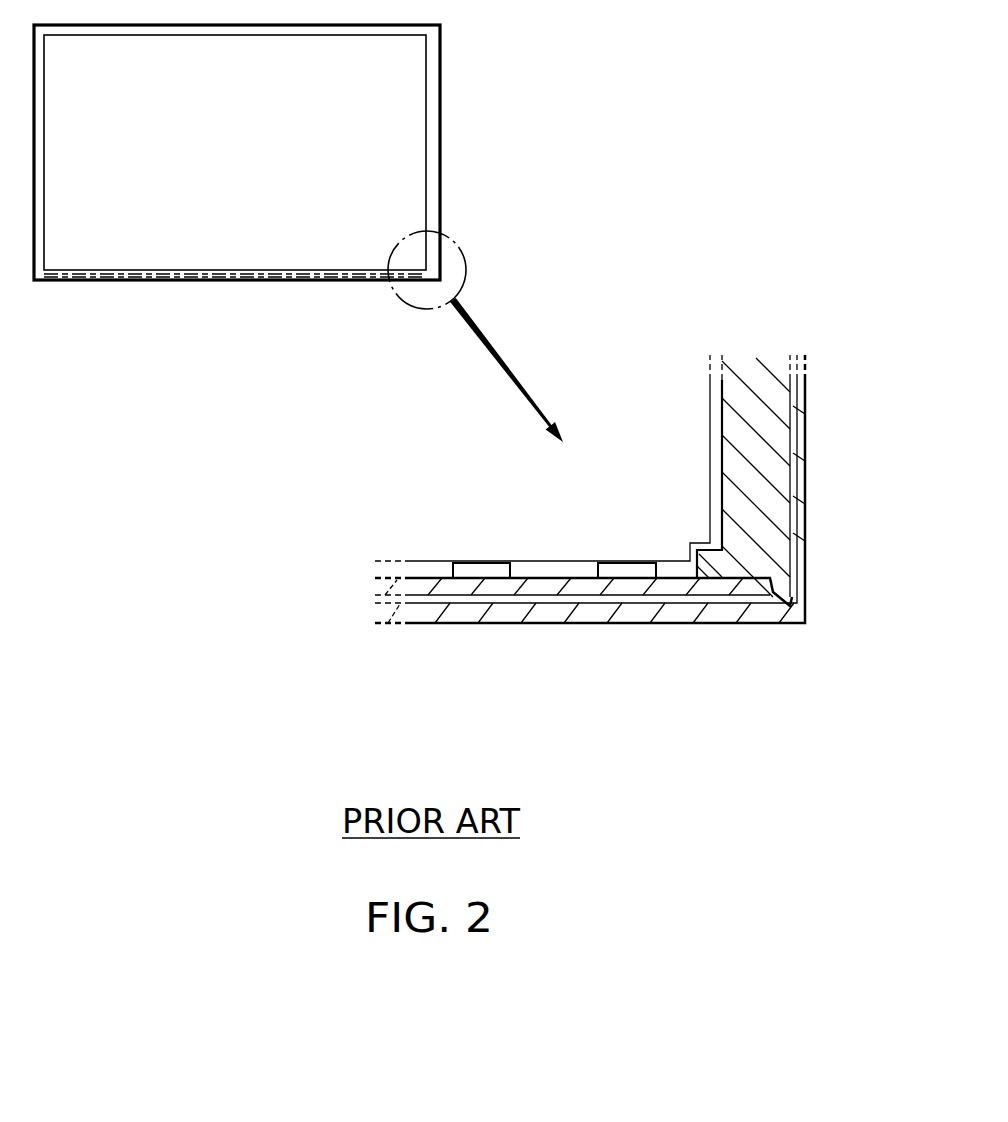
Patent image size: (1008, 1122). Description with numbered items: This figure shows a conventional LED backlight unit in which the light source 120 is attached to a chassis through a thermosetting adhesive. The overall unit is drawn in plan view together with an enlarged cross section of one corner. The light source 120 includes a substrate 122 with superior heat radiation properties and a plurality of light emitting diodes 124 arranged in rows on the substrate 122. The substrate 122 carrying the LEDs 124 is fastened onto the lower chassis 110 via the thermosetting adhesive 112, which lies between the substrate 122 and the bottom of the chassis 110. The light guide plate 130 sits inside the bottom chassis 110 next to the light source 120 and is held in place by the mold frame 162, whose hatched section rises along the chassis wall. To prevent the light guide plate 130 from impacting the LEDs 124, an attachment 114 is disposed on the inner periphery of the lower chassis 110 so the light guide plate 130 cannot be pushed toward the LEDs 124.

The bottom chassis 110 is at (440, 165).
The thermosetting adhesive 112 is at (690, 606).
The attachment 114 is at (700, 566).
The light source 120 is at (356, 594).
The substrate 122 is at (250, 285).
The light emitting diodes 124 is at (158, 281).
The light guide plate 130 is at (417, 128).
The mold frame 162 is at (767, 493).